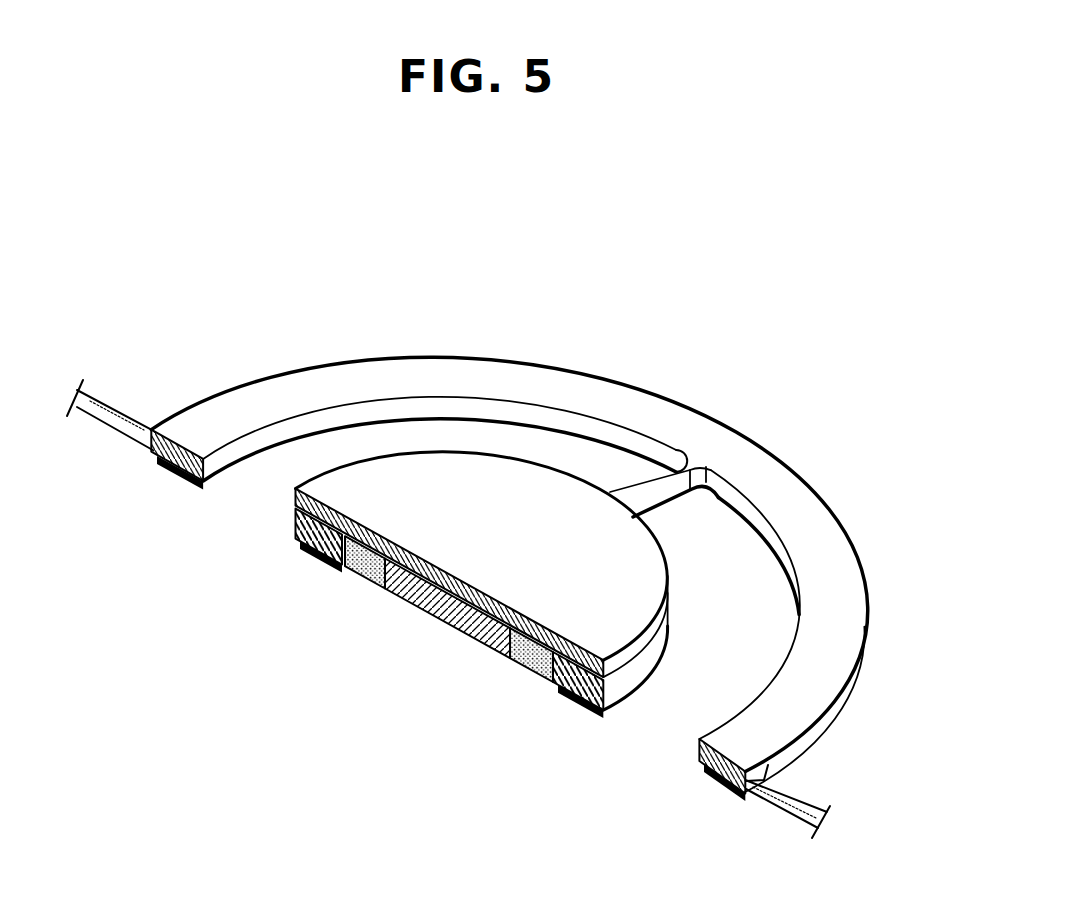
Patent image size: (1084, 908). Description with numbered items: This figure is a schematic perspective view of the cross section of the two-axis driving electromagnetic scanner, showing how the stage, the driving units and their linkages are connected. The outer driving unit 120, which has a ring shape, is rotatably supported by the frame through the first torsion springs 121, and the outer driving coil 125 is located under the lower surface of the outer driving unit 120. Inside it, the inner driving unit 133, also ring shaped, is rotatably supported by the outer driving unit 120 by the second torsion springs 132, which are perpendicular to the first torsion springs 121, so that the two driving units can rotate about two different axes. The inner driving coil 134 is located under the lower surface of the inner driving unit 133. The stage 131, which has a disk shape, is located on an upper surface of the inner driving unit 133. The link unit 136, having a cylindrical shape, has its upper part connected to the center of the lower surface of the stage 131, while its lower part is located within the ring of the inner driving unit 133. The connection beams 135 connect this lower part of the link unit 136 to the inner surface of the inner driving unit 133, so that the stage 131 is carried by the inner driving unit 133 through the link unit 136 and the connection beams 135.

The outer driving unit 120 is at (836, 544).
The first torsion springs 121 is at (783, 800).
The outer driving coil 125 is at (717, 781).
The stage 131 is at (428, 470).
The second torsion springs 132 is at (638, 485).
The inner driving unit 133 is at (297, 521).
The inner driving coil 134 is at (302, 549).
The connection beams 135 is at (363, 569).
The link unit 136 is at (440, 619).